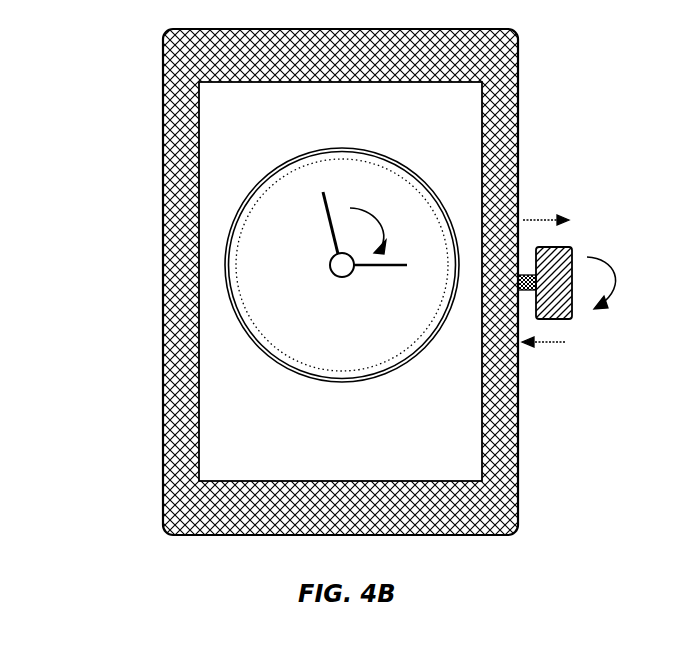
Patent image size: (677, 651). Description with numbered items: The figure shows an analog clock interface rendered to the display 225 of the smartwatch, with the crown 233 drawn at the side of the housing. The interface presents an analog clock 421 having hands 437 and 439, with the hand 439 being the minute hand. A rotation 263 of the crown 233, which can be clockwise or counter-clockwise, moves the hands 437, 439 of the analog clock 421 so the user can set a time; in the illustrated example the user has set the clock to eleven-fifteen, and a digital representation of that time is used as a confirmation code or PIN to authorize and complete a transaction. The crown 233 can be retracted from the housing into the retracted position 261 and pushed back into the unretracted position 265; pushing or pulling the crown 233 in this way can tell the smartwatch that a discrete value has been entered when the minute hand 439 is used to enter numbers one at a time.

The display 225 is at (249, 145).
The analog clock 421 is at (380, 378).
The hand 437 is at (368, 268).
The minute hand 439 is at (327, 212).
The crown 233 is at (563, 252).
The retracted position 261 is at (546, 208).
The rotation 263 is at (625, 283).
The unretracted position 265 is at (544, 357).